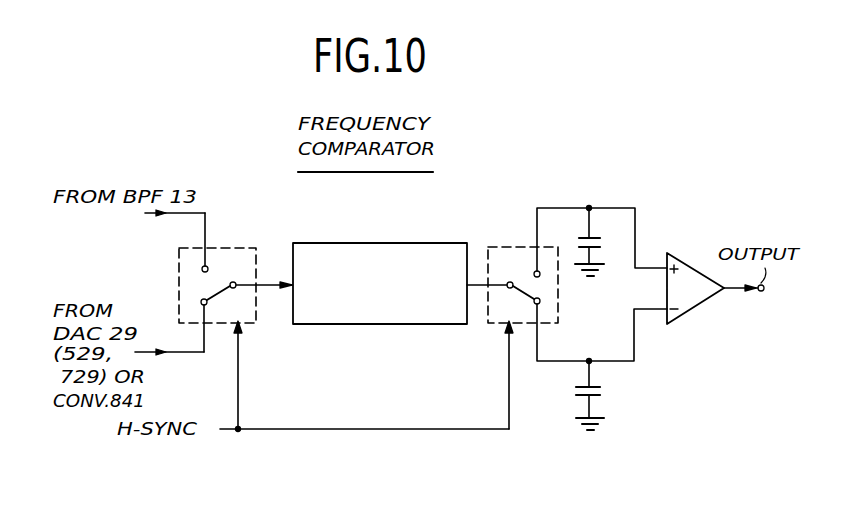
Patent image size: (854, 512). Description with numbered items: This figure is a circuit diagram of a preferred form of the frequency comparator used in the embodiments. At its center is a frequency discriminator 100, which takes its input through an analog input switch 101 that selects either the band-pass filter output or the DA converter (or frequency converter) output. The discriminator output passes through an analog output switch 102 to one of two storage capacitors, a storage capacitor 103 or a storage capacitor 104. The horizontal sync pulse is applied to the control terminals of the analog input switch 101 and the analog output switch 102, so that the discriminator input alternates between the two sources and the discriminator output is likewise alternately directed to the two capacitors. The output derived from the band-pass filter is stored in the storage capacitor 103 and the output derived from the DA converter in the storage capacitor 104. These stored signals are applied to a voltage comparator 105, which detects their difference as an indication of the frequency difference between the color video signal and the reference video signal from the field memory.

The frequency discriminator 100 is at (403, 243).
The analog input switch 101 is at (230, 244).
The analog output switch 102 is at (507, 245).
The storage capacitor 103 is at (597, 237).
The storage capacitor 104 is at (597, 395).
The voltage comparator 105 is at (692, 312).